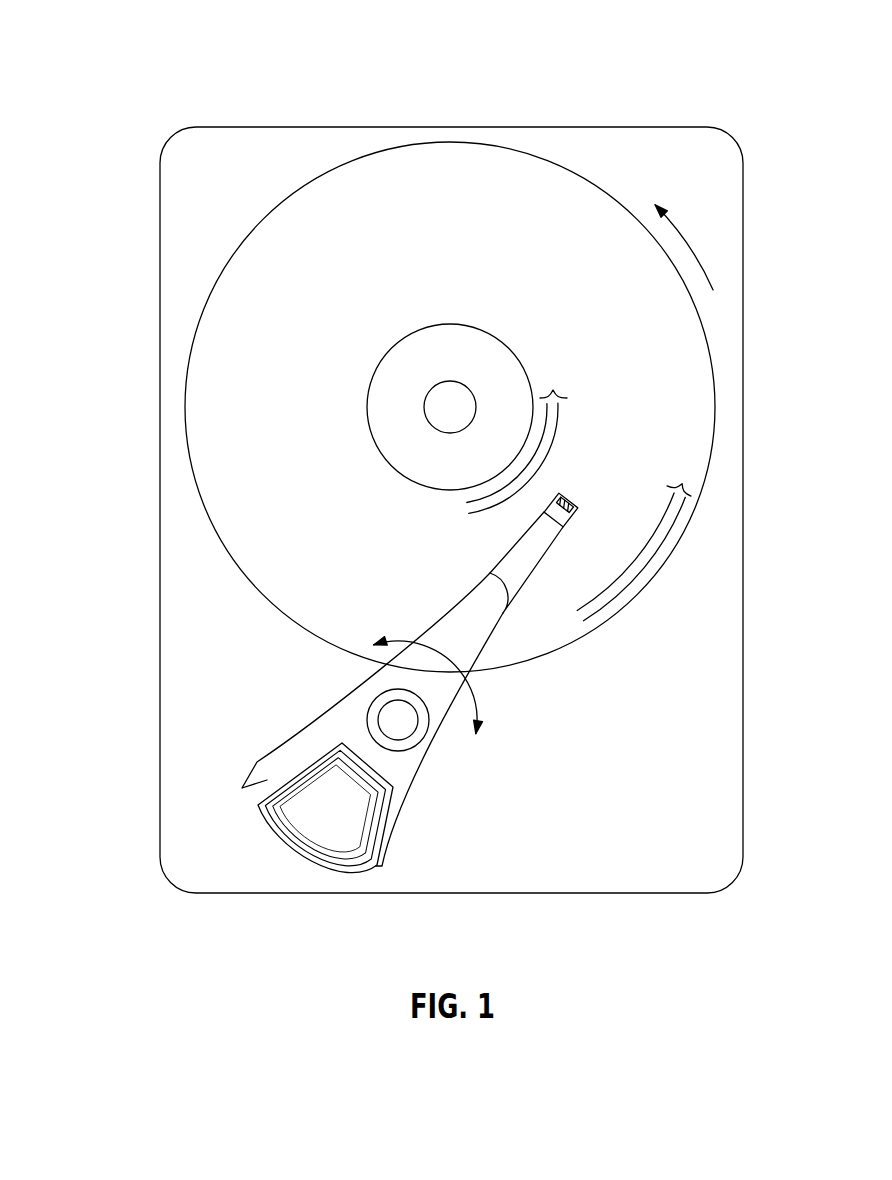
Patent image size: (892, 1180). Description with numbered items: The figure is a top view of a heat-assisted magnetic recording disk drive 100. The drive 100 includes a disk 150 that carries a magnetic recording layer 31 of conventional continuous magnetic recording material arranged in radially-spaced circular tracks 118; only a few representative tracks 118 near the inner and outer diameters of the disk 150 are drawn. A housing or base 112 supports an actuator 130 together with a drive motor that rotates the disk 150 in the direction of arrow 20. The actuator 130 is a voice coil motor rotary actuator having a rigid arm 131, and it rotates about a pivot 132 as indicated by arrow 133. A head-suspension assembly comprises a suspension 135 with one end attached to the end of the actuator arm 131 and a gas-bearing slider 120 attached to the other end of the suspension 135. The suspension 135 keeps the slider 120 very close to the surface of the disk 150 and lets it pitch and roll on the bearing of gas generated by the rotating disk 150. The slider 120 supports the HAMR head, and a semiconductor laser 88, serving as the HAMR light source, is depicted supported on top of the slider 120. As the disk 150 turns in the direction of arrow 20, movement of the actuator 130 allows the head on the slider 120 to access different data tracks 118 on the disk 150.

The HAMR disk drive 100 is at (152, 42).
The housing or base 112 is at (670, 127).
The disk 150 is at (311, 184).
The magnetic recording layer 31 is at (693, 372).
The arrow 20 is at (684, 232).
The tracks 118 is at (553, 390).
The gas-bearing slider 120 is at (565, 512).
The semiconductor laser 88 is at (571, 508).
The suspension 135 is at (493, 577).
The rigid arm 131 is at (438, 626).
The arrow 133 is at (472, 702).
The pivot 132 is at (391, 715).
The actuator 130 is at (250, 770).